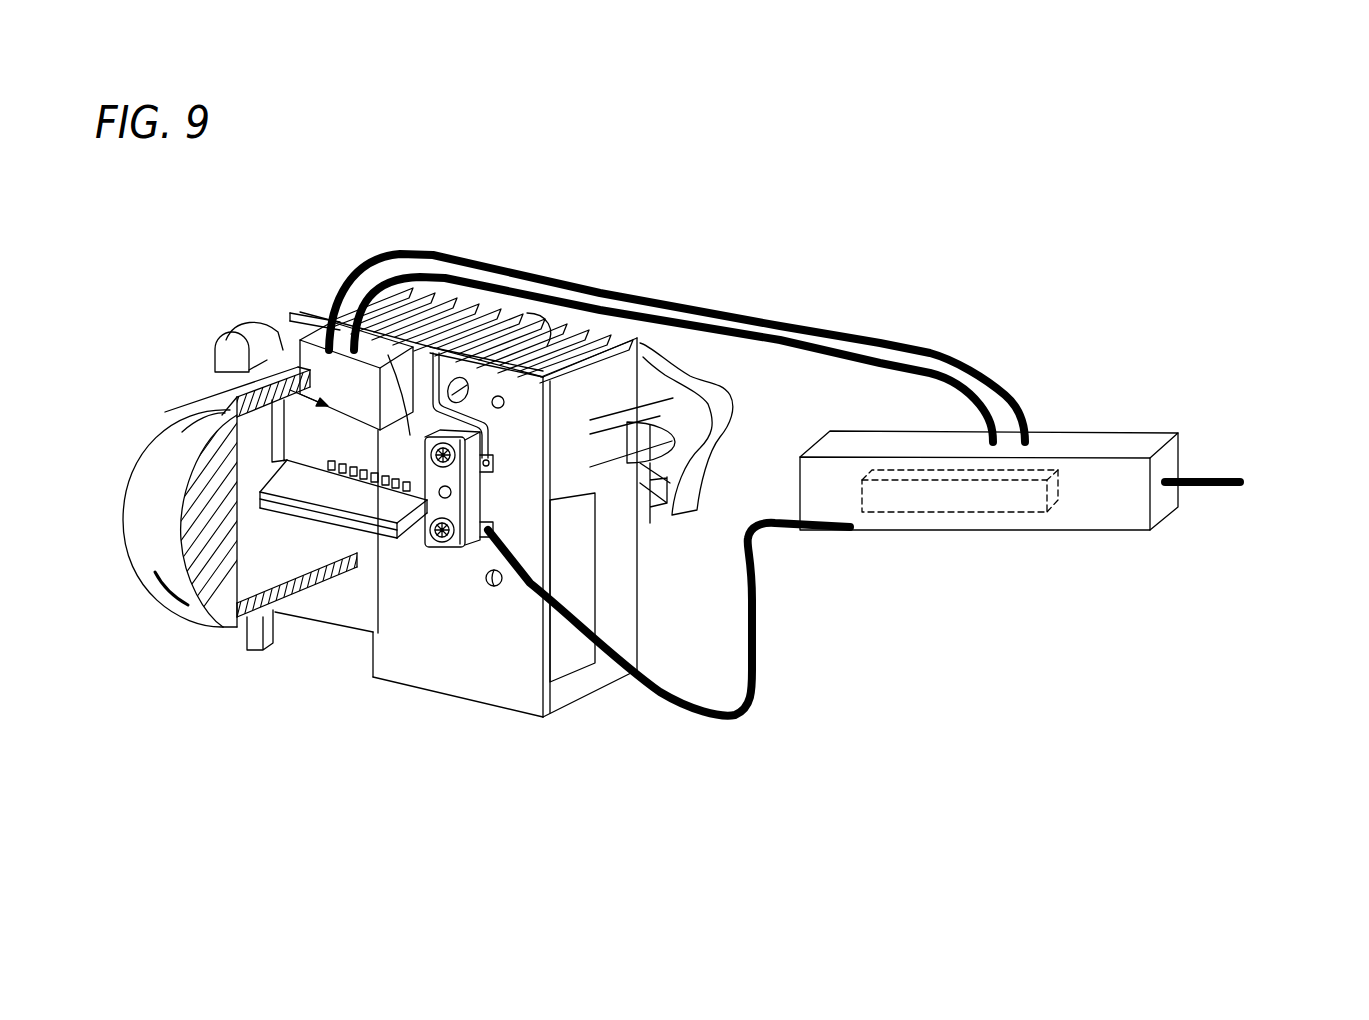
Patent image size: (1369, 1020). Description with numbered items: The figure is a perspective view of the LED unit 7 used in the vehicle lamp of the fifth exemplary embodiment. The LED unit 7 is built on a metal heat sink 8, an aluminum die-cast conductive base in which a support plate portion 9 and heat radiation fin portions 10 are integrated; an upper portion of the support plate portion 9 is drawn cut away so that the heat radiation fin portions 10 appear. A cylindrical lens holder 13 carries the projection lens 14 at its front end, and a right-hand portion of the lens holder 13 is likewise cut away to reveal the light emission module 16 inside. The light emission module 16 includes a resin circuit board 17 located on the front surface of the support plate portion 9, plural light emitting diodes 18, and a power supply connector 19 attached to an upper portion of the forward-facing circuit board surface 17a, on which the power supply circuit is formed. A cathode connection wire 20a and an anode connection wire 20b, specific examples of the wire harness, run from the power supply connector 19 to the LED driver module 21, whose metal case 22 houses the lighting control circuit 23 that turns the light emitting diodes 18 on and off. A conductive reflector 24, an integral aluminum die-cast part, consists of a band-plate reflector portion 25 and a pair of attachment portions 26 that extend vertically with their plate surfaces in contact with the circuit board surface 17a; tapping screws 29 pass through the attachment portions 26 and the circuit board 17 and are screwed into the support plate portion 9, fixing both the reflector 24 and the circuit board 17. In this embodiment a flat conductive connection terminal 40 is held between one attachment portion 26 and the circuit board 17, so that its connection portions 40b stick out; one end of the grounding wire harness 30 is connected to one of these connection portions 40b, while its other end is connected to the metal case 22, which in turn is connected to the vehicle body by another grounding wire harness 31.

The LED unit 7 is at (551, 228).
The heat sink 8 is at (525, 209).
The support plate portion 9 is at (504, 285).
The heat radiation fin portions 10 is at (455, 370).
The lens holder 13 is at (237, 397).
The projection lens 14 is at (163, 568).
The light emission module 16 is at (287, 372).
The circuit board surface 17a is at (342, 298).
The circuit board 17 is at (333, 380).
The light emitting diodes 18 is at (387, 483).
The power supply connector 19 is at (315, 322).
The cathode connection wire 20a is at (842, 350).
The anode connection wire 20b is at (927, 348).
The LED driver module 21 is at (989, 446).
The metal case 22 is at (1088, 442).
The lighting control circuit 23 is at (948, 505).
The conductive reflector 24 is at (343, 593).
The reflector portion 25 is at (353, 494).
The attachment portions 26 is at (283, 450).
The tapping screws 29 is at (470, 447).
The grounding wire harness 30 is at (680, 708).
The grounding wire harness 31 is at (1203, 488).
The connection terminal 40 is at (584, 549).
The connection portions 40b is at (488, 527).